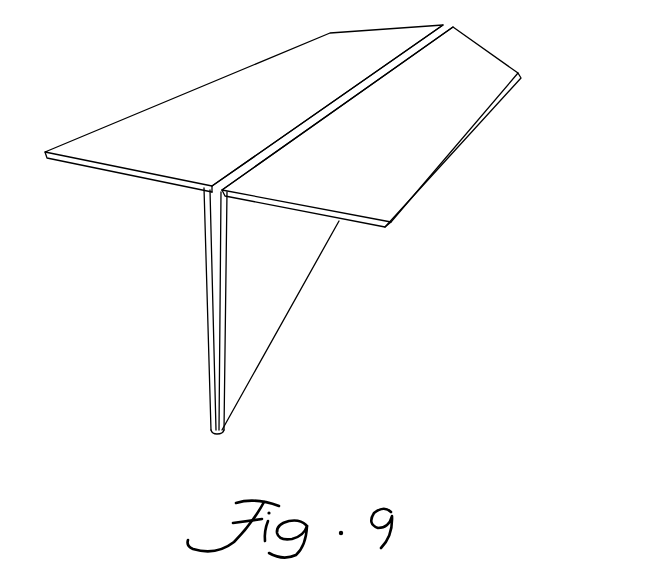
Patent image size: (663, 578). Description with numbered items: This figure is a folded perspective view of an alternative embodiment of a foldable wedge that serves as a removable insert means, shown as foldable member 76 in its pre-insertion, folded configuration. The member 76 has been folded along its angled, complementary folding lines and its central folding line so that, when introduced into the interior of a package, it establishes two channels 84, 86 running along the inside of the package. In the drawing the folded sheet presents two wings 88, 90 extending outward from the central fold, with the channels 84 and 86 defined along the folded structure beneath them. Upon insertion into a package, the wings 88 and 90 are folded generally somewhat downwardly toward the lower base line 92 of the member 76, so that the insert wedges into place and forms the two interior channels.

The foldable member 76 is at (451, 180).
The channel 84 is at (205, 229).
The channel 86 is at (304, 237).
The wing 88 is at (250, 122).
The wing 90 is at (392, 144).
The lower base line 92 is at (247, 386).